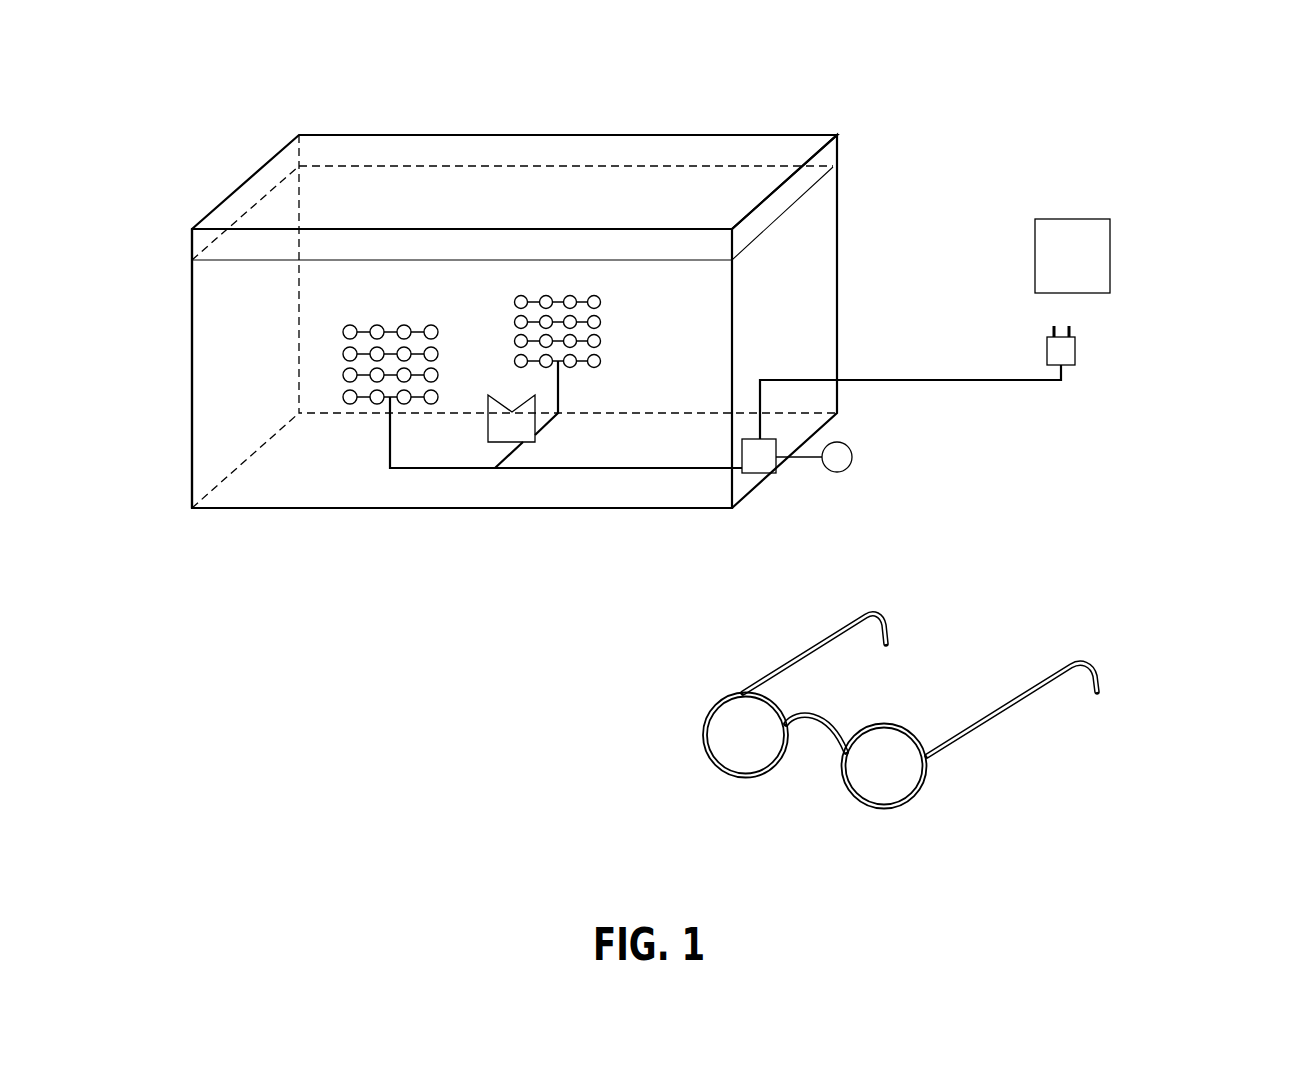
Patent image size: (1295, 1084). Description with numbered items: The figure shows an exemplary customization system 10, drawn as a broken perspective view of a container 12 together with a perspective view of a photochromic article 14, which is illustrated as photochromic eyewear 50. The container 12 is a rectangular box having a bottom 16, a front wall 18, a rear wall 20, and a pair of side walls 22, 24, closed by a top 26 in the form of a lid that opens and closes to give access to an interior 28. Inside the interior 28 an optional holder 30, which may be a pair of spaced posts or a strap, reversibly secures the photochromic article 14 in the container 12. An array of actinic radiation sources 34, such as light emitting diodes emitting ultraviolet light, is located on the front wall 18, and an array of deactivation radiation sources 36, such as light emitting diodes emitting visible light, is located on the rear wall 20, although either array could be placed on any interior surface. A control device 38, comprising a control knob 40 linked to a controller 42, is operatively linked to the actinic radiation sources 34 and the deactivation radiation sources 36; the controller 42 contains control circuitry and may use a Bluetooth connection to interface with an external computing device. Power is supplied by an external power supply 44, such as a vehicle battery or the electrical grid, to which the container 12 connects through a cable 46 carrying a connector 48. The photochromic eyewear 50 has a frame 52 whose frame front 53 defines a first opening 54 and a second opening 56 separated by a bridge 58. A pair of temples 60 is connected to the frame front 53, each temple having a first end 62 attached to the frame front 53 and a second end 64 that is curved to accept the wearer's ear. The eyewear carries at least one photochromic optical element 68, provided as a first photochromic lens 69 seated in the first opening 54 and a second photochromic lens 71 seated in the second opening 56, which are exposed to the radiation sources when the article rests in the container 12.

The customization system 10 is at (914, 148).
The container 12 is at (518, 318).
The photochromic article 14 is at (941, 724).
The photochromic eyewear 50 is at (941, 724).
The bottom 16 is at (403, 509).
The front wall 18 is at (166, 463).
The rear wall 20 is at (462, 114).
The side wall 22 is at (150, 320).
The side wall 24 is at (807, 274).
The top 26 is at (609, 254).
The interior 28 is at (514, 321).
The holder 30 is at (486, 456).
The actinic radiation source 34 is at (350, 400).
The deactivation radiation source 36 is at (570, 302).
The control device 38 is at (959, 450).
The control knob 40 is at (837, 472).
The controller 42 is at (753, 474).
The power supply 44 is at (1110, 245).
The cable 46 is at (1000, 380).
The connector 48 is at (1075, 342).
The frame 52 is at (857, 724).
The frame front 53 is at (779, 794).
The first opening 54 is at (814, 763).
The second opening 56 is at (902, 832).
The bridge 58 is at (837, 717).
The temples 60 is at (787, 655).
The first end 62 is at (712, 692).
The second end 64 is at (901, 617).
The photochromic optical element 68 is at (727, 738).
The first photochromic lens 69 is at (758, 717).
The second photochromic lens 71 is at (900, 745).